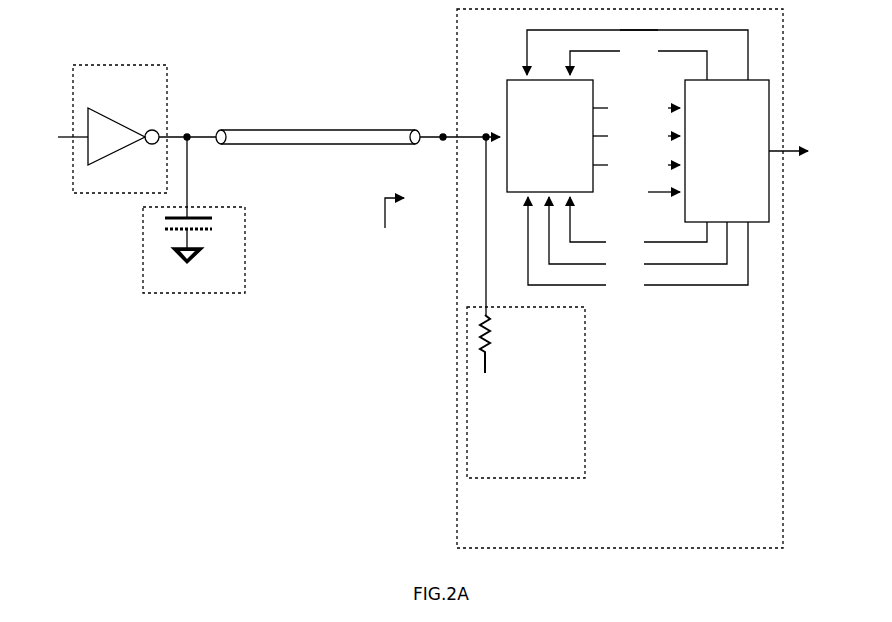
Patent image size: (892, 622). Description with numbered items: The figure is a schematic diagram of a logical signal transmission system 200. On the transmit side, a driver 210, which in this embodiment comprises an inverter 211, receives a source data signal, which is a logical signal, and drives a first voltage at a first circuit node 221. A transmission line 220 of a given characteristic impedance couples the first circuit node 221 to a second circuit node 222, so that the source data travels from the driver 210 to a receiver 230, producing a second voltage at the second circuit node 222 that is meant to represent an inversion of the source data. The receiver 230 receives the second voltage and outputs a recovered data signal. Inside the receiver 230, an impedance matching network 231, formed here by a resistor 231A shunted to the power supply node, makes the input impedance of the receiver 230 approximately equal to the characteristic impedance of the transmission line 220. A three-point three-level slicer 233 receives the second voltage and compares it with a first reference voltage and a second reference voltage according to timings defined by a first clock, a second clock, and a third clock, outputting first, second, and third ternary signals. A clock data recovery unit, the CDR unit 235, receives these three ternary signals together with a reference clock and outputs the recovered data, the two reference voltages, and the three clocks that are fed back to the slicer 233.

The logical signal transmission system 200 is at (100, 329).
The driver 210 is at (133, 65).
The inverter 211 is at (122, 120).
The transmission line 220 is at (268, 127).
The first circuit node 221 is at (188, 141).
The second circuit node 222 is at (445, 141).
The receiver 230 is at (530, 549).
The impedance matching network 231 is at (576, 479).
The resistor 231A is at (488, 353).
The 3-point 3-level slicer 233 is at (515, 80).
The CDR unit 235 is at (690, 80).